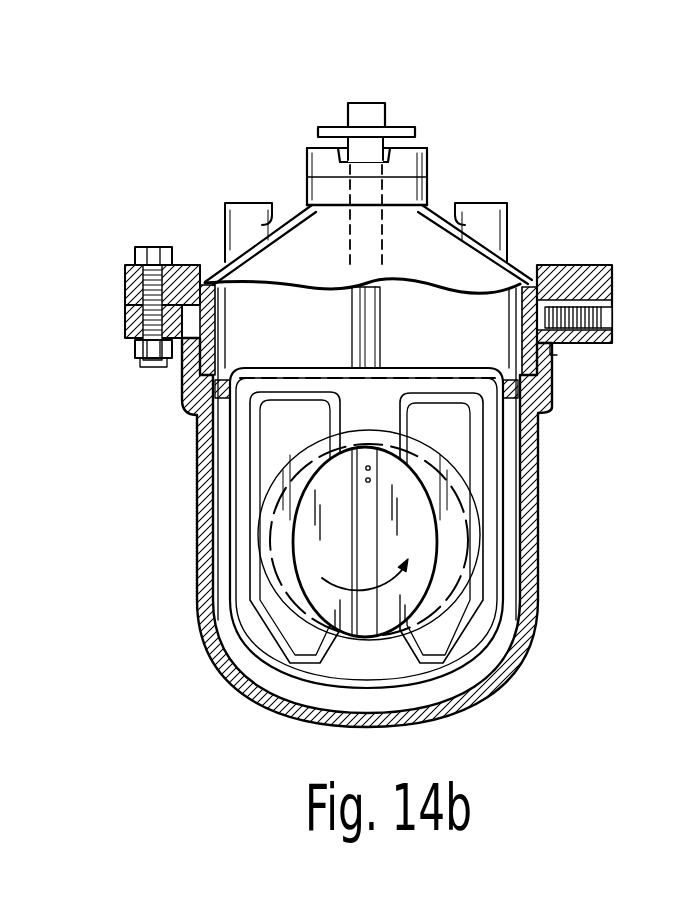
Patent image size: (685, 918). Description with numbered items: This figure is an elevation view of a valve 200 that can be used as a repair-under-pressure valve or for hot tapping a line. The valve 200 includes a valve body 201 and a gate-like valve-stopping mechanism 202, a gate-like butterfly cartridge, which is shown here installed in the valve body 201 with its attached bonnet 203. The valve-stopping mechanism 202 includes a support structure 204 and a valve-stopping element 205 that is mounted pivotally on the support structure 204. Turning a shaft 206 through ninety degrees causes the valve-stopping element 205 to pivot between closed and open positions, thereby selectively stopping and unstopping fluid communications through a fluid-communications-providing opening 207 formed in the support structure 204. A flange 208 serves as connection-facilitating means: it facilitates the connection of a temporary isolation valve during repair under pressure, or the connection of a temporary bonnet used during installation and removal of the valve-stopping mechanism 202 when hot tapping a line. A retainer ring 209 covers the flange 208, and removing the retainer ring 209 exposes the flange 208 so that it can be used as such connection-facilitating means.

The valve 200 is at (534, 168).
The valve body 201 is at (537, 507).
The valve-stopping mechanism 202 is at (491, 471).
The bonnet 203 is at (273, 252).
The support structure 204 is at (240, 613).
The valve-stopping element 205 is at (310, 547).
The shaft 206 is at (363, 142).
The fluid-communications-providing opening 207 is at (285, 505).
The flange 208 is at (125, 338).
The retainer ring 209 is at (126, 265).